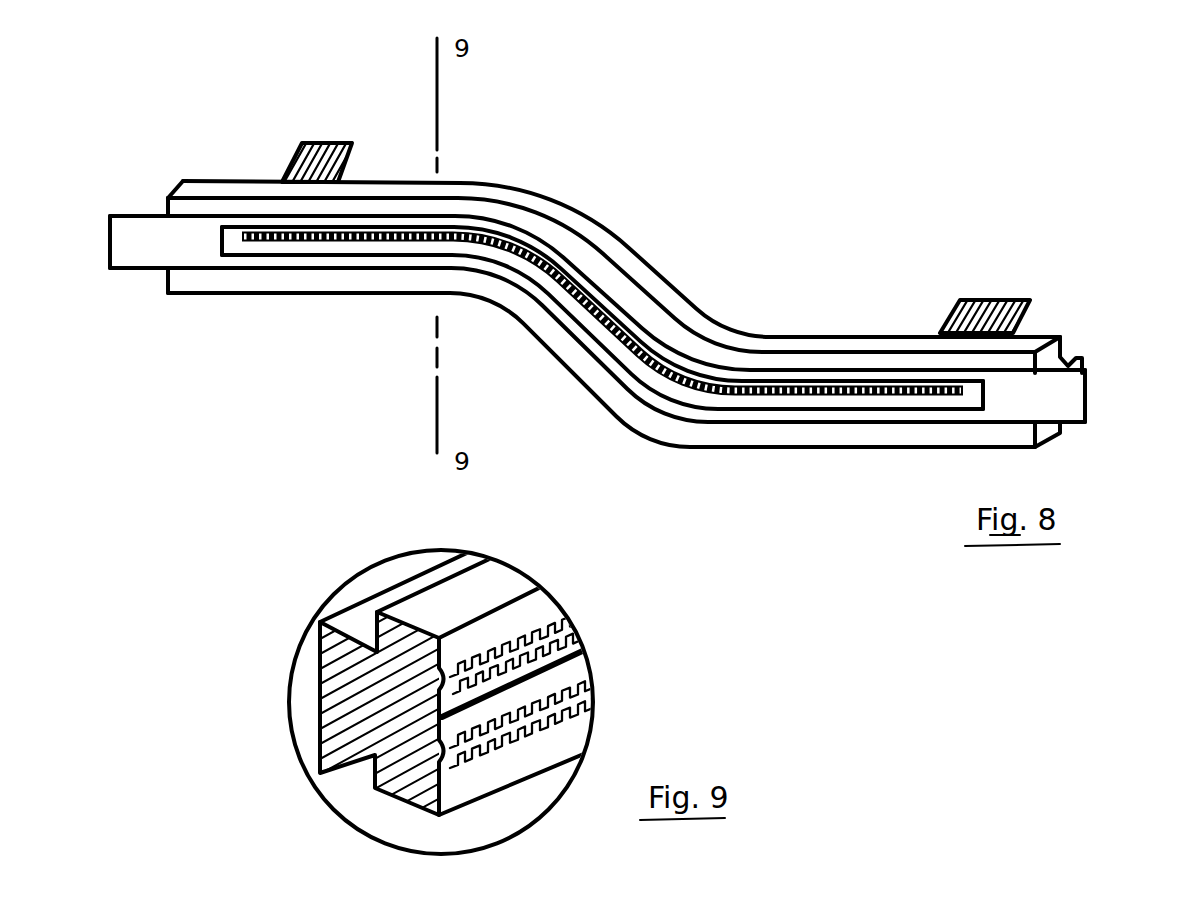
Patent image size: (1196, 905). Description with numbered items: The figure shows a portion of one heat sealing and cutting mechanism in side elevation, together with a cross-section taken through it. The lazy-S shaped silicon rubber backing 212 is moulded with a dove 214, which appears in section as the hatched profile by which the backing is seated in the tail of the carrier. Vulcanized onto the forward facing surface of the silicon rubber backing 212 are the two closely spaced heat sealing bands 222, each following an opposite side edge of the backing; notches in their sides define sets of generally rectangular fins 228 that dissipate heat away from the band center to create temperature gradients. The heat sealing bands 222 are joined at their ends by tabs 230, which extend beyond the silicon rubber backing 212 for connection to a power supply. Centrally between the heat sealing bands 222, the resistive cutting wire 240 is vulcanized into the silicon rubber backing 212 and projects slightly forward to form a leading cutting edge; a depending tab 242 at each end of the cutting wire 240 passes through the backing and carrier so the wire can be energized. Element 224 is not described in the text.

In FIG. 8, the silicon rubber backing 212 is at (835, 343).
In FIG. 9, the silicon rubber backing 212 is at (487, 588).
In FIG. 8, the dove 214 is at (1083, 361).
In FIG. 9, the dove 214 is at (320, 621).
In FIG. 8, the heat sealing band 222 is at (637, 333).
In FIG. 9, the heat sealing band 222 is at (563, 628).
In FIG. 9, the second conductive layer 224 is at (516, 750).
In FIG. 9, the fin 228 is at (587, 688).
In FIG. 8, the tab 230 is at (117, 255).
In FIG. 8, the cutting wire 240 is at (813, 397).
In FIG. 9, the cutting wire 240 is at (587, 656).
In FIG. 8, the depending tab 242 is at (325, 143).